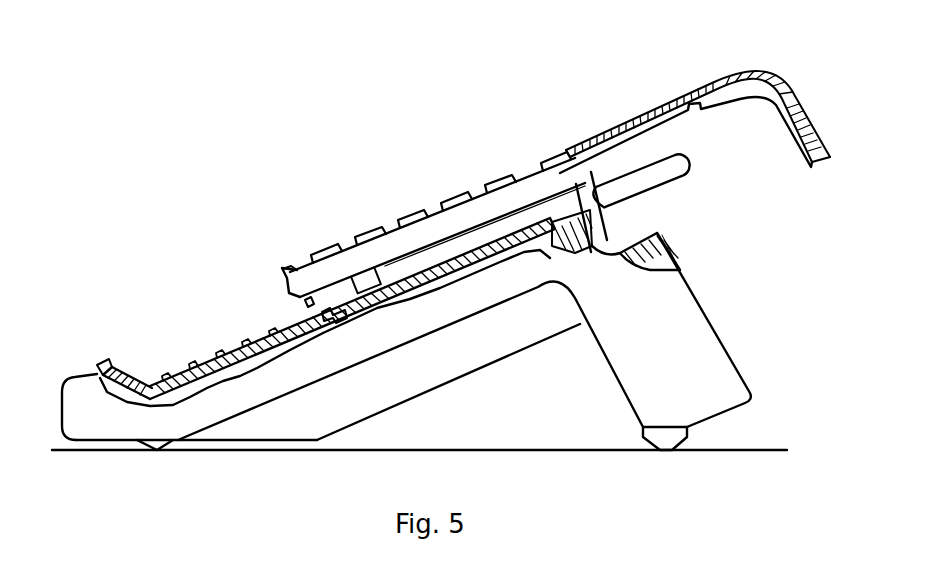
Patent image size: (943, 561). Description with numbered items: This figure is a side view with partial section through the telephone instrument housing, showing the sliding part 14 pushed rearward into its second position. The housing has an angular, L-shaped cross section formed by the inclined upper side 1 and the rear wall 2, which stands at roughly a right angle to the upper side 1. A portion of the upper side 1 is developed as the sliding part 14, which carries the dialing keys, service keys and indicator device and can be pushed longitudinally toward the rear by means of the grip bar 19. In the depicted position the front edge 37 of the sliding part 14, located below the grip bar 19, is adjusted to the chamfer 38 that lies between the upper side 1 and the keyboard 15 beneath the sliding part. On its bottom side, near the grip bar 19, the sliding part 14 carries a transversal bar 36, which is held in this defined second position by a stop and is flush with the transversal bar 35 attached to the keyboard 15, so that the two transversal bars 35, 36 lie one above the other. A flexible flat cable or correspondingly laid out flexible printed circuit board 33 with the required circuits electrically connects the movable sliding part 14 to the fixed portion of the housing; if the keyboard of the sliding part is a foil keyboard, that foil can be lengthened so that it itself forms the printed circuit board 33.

The upper side 1 is at (100, 372).
The rear wall 2 is at (813, 108).
The sliding part 14 is at (507, 197).
The keyboard 15 is at (272, 334).
The grip bar 19 is at (288, 275).
The flexible printed circuit board 33 is at (690, 170).
The transversal bar 35 is at (318, 313).
The transversal bar 36 is at (315, 292).
The front edge 37 is at (311, 302).
The chamfer 38 is at (136, 381).